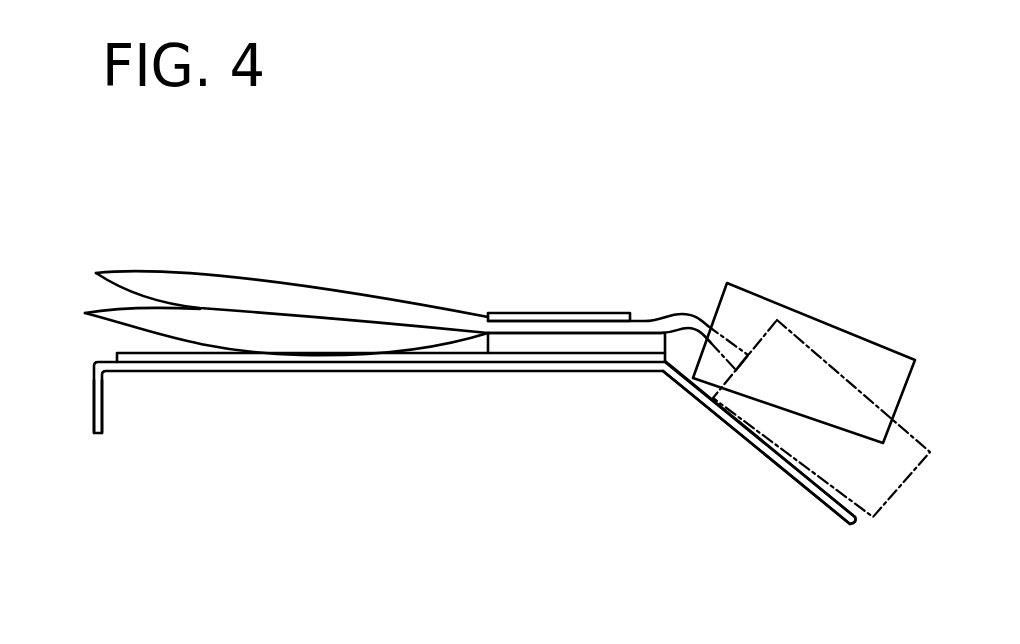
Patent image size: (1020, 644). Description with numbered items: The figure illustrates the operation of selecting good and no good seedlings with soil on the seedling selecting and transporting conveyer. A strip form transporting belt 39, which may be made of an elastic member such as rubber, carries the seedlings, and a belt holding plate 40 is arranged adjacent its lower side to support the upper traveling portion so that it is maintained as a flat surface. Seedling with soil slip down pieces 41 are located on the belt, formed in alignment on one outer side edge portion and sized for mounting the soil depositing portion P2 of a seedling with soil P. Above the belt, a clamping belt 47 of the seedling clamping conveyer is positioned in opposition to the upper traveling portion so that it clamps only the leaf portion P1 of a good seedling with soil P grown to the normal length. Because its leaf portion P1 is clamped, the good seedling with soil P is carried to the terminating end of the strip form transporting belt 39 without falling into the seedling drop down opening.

The strip form transporting belt 39 is at (313, 355).
The belt holding plate 40 is at (94, 362).
The seedling with soil slip down piece 41 is at (743, 425).
The clamping belt 47 is at (543, 317).
The good seedling with soil P is at (650, 317).
The leaf portion P1 is at (293, 295).
The soil depositing portion P2 is at (777, 300).